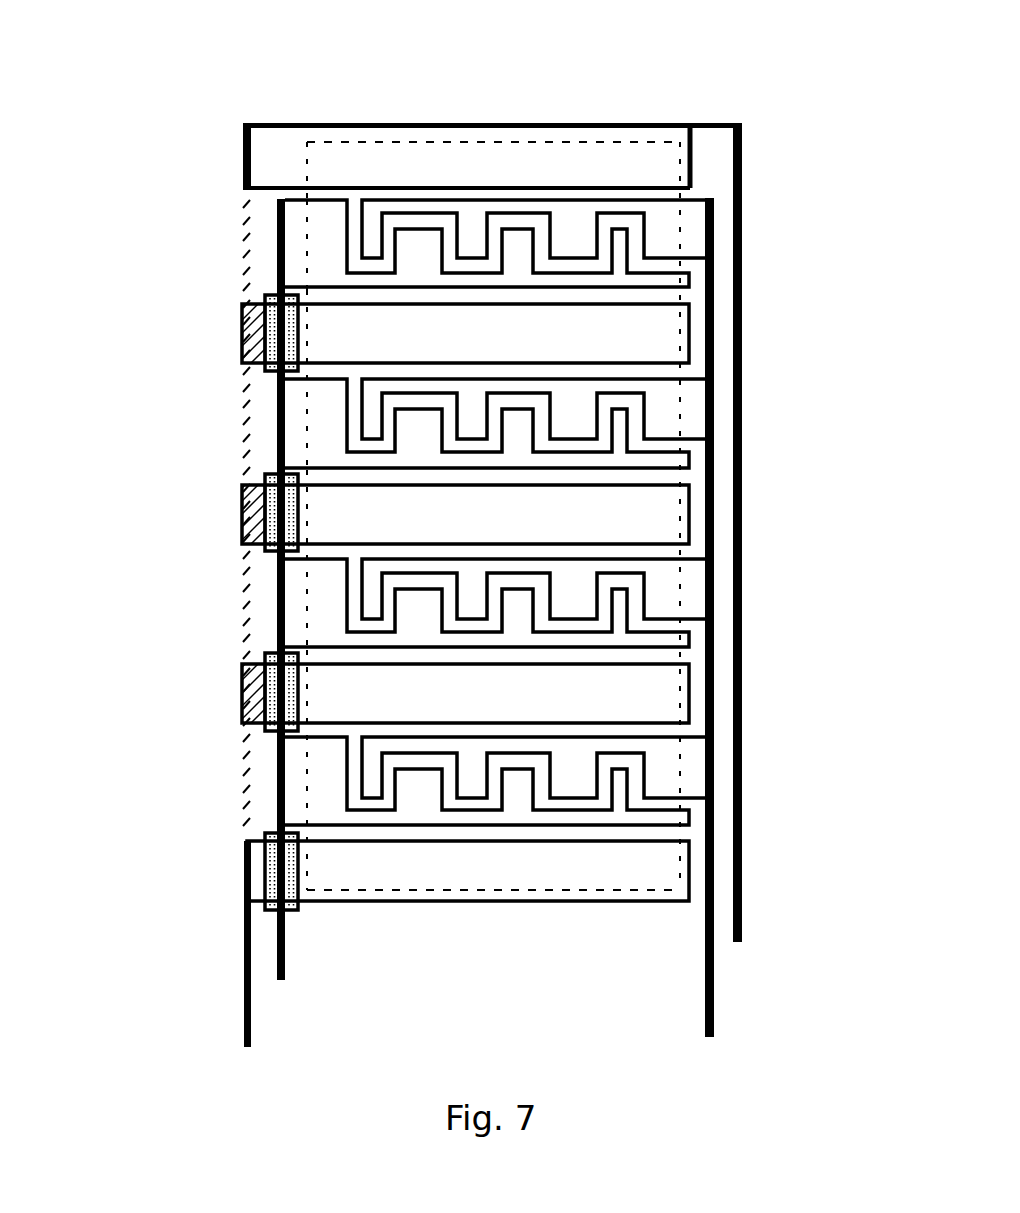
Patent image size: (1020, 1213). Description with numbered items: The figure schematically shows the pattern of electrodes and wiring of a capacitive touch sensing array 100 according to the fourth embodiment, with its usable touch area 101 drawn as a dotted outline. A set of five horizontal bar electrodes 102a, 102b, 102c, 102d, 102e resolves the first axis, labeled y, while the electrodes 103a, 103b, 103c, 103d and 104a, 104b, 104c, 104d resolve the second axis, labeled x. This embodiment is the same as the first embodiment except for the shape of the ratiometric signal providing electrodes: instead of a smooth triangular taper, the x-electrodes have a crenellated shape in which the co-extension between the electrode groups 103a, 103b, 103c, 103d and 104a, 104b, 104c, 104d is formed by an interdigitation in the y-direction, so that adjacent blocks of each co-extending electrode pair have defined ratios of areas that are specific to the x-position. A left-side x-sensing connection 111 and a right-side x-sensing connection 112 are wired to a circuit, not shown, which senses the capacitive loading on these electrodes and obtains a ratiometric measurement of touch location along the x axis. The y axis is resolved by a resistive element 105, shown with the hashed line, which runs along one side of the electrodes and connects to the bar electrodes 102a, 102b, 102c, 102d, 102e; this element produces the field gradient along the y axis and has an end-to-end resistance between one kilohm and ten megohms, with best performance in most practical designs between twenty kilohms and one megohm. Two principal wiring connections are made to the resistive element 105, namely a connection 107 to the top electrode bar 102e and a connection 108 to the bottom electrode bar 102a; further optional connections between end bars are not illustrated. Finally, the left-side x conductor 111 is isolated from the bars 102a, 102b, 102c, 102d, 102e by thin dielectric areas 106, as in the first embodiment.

The capacitive touch sensing array 100 is at (503, 75).
The usable touch area 101 is at (307, 163).
The bar electrode 102a is at (667, 862).
The bar electrode 102b is at (667, 692).
The bar electrode 102c is at (667, 512).
The bar electrode 102d is at (667, 330).
The bar electrode 102e is at (665, 160).
The x-electrode 103a is at (320, 758).
The x-electrode 103b is at (320, 592).
The x-electrode 103c is at (317, 418).
The x-electrode 103d is at (297, 242).
The x-electrode 104a is at (667, 773).
The x-electrode 104b is at (667, 592).
The x-electrode 104c is at (667, 410).
The x-electrode 104d is at (665, 226).
The resistive element 105 is at (247, 290).
The thin dielectric area 106 is at (243, 493).
The wiring connection 107 is at (743, 898).
The wiring connection 108 is at (251, 1010).
The left-side x-sensing connection 111 is at (285, 942).
The right-side x-sensing connection 112 is at (716, 997).